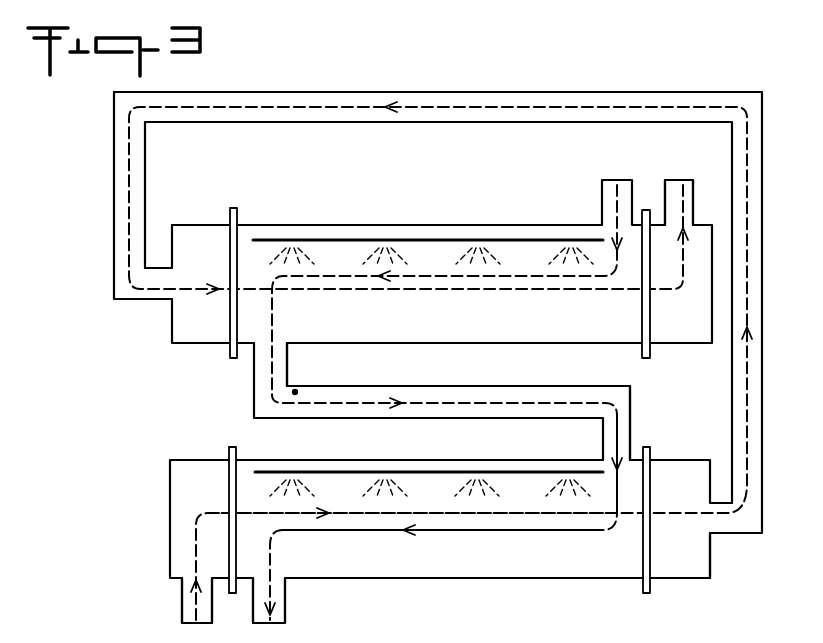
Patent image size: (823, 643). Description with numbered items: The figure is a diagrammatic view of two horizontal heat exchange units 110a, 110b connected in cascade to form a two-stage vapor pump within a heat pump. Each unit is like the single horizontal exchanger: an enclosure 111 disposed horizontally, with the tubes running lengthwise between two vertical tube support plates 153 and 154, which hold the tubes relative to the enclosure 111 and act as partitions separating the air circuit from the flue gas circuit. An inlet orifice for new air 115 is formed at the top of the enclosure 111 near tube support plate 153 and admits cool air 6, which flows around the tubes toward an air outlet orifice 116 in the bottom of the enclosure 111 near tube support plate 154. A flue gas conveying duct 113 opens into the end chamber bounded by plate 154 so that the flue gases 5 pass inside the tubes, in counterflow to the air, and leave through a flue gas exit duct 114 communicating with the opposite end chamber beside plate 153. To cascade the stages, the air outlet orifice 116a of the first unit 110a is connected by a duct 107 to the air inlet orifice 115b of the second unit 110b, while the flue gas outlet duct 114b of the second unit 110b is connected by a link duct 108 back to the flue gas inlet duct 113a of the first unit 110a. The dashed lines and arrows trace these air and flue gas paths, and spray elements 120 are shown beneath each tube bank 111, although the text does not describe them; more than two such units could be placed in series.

The flue gases 5 is at (386, 518).
The cool air 6 is at (484, 531).
The duct 107 is at (495, 390).
The link duct 108 is at (514, 90).
The first unit 110a is at (415, 383).
The second unit 110b is at (442, 504).
The enclosure 111 is at (350, 225).
The flue gas conveying duct 113 is at (182, 608).
The flue gas inlet duct 113a is at (137, 300).
The flue gas exit duct 114 is at (693, 192).
The flue gas outlet duct 114b is at (755, 534).
The inlet orifice for new air 115 is at (602, 192).
The air inlet orifice 115b is at (632, 456).
The air outlet orifice 116 is at (285, 609).
The air outlet orifice 116a is at (290, 350).
The spray nozzles 120 is at (449, 235).
The tube support plate 153 is at (233, 208).
The tube support plate 154 is at (646, 210).